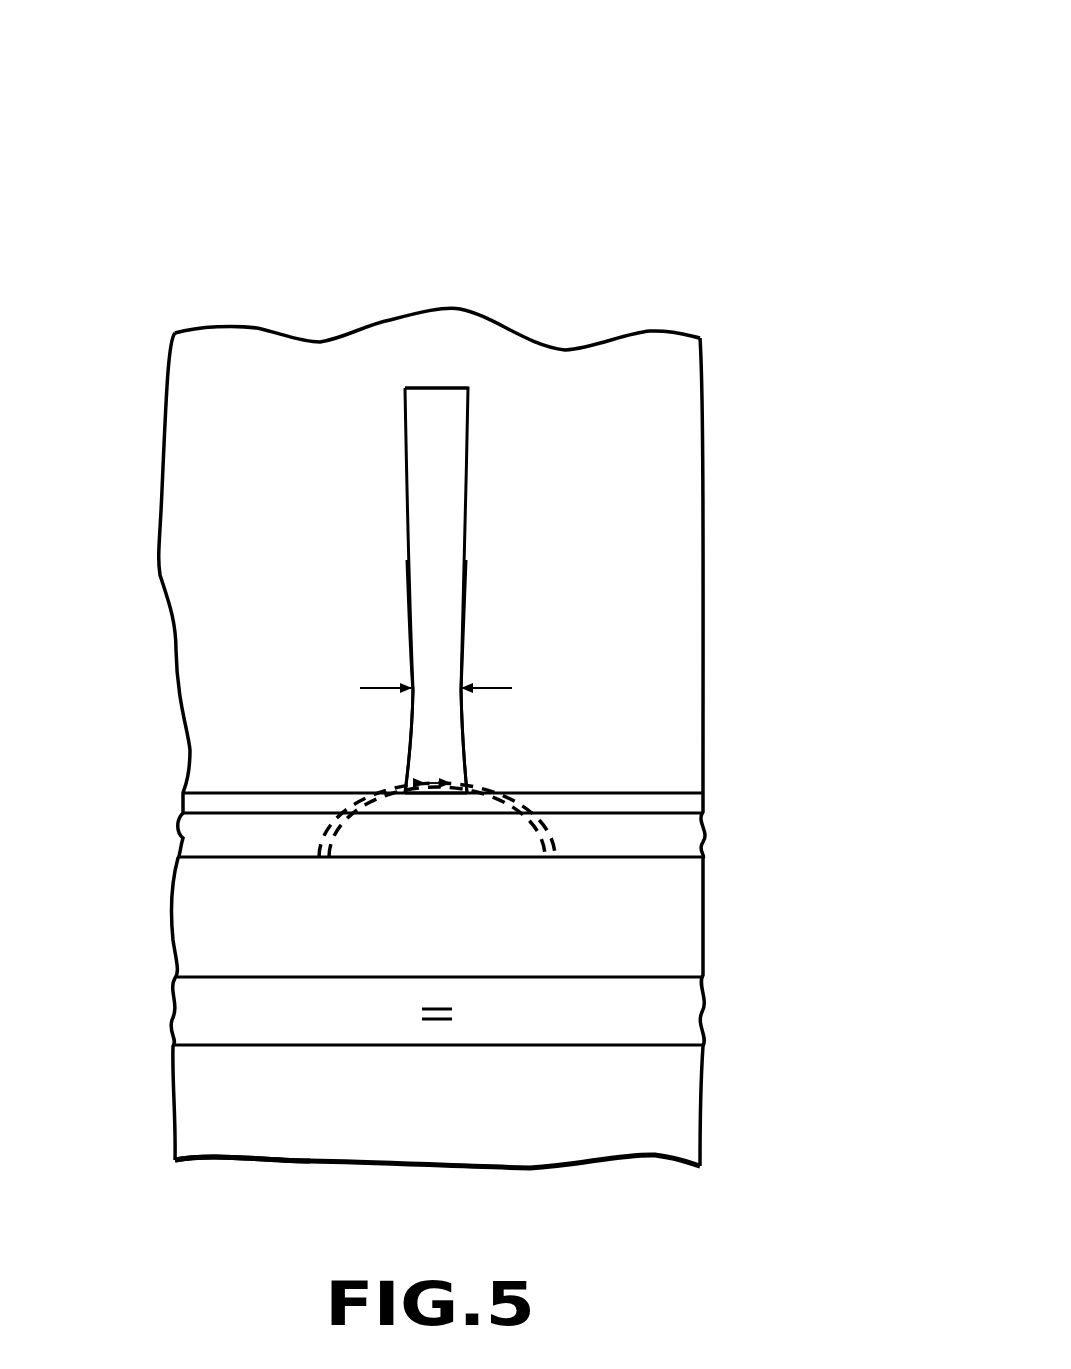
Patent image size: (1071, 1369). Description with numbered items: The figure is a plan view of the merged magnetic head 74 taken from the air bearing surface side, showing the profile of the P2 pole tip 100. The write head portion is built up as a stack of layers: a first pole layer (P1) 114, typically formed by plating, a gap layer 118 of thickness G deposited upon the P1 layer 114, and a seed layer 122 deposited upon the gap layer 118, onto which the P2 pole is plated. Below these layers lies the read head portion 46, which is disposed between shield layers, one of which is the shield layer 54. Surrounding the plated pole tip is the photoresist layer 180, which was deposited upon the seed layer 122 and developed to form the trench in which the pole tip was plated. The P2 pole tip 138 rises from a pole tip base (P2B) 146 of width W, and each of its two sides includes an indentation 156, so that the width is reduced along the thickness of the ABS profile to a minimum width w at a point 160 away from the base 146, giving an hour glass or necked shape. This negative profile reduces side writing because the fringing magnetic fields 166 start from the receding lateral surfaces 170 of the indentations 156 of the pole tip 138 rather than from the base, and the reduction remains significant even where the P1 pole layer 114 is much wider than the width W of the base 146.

The merged magnetic head 74 is at (790, 85).
The photoresist layer 180 is at (160, 578).
The P2 pole tip 138 is at (432, 388).
The P2 pole tip 100 is at (447, 459).
The point of minimum width 160 is at (437, 690).
The indentation 156 is at (409, 687).
The receding lateral surfaces 170 is at (408, 777).
The fringing magnetic fields 166 is at (370, 784).
The seed layer 122 is at (705, 800).
The gap layer 118 is at (178, 836).
The first pole layer (P1) 114 is at (170, 895).
The pole tip base (P2B) 146 is at (436, 797).
The read head portion 46 is at (415, 1003).
The shield layer 54 is at (170, 1095).